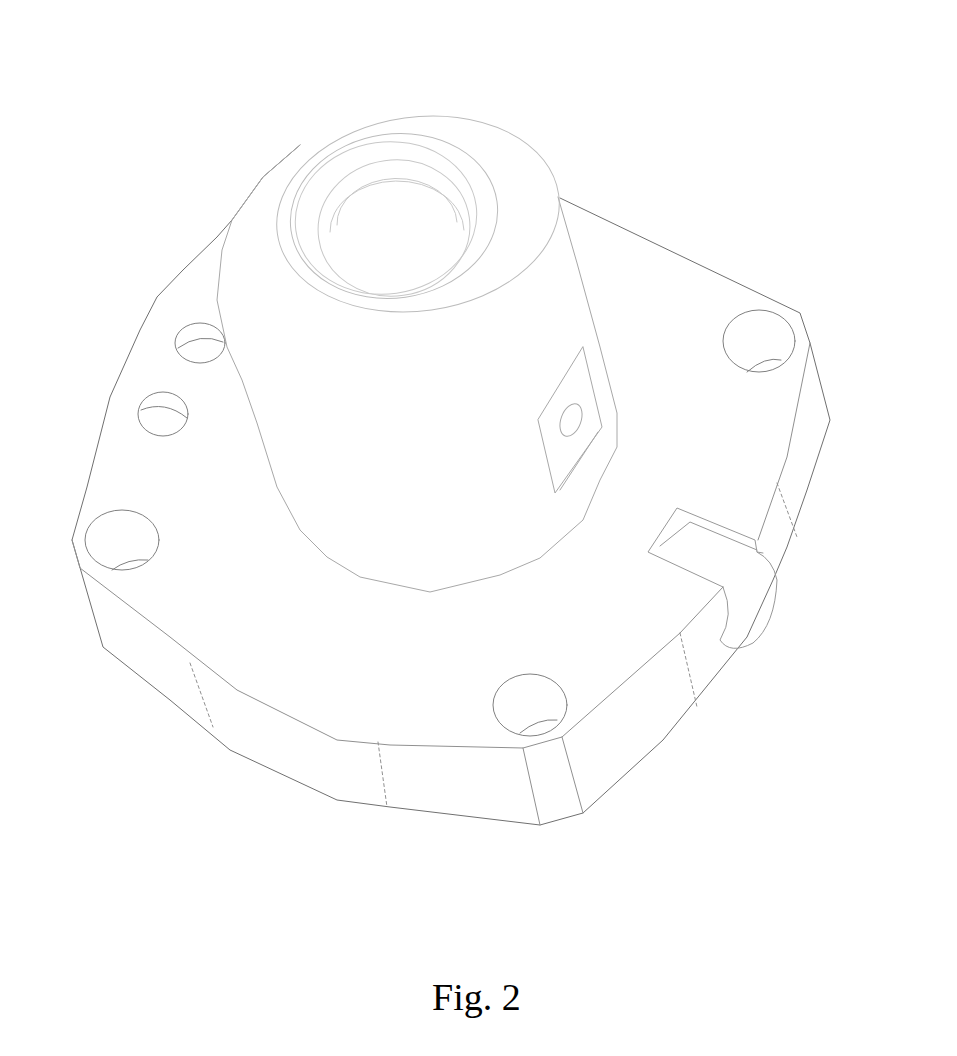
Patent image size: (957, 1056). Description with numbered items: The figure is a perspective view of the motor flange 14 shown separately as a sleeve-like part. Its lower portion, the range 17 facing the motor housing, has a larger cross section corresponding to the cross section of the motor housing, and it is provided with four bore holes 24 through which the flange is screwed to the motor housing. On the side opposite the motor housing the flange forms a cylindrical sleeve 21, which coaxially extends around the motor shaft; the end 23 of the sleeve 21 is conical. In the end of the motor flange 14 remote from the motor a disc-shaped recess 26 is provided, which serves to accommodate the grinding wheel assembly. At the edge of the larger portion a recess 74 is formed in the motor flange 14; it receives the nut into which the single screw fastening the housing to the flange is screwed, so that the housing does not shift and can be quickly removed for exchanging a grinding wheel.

The motor flange 14 is at (630, 148).
The range facing the motor housing 17 is at (252, 735).
The cylindrical sleeve 21 is at (307, 470).
The end of the sleeve 23 is at (260, 210).
The bore holes 24 is at (112, 532).
The disc-shaped recess 26 is at (383, 152).
The recess 74 is at (748, 603).